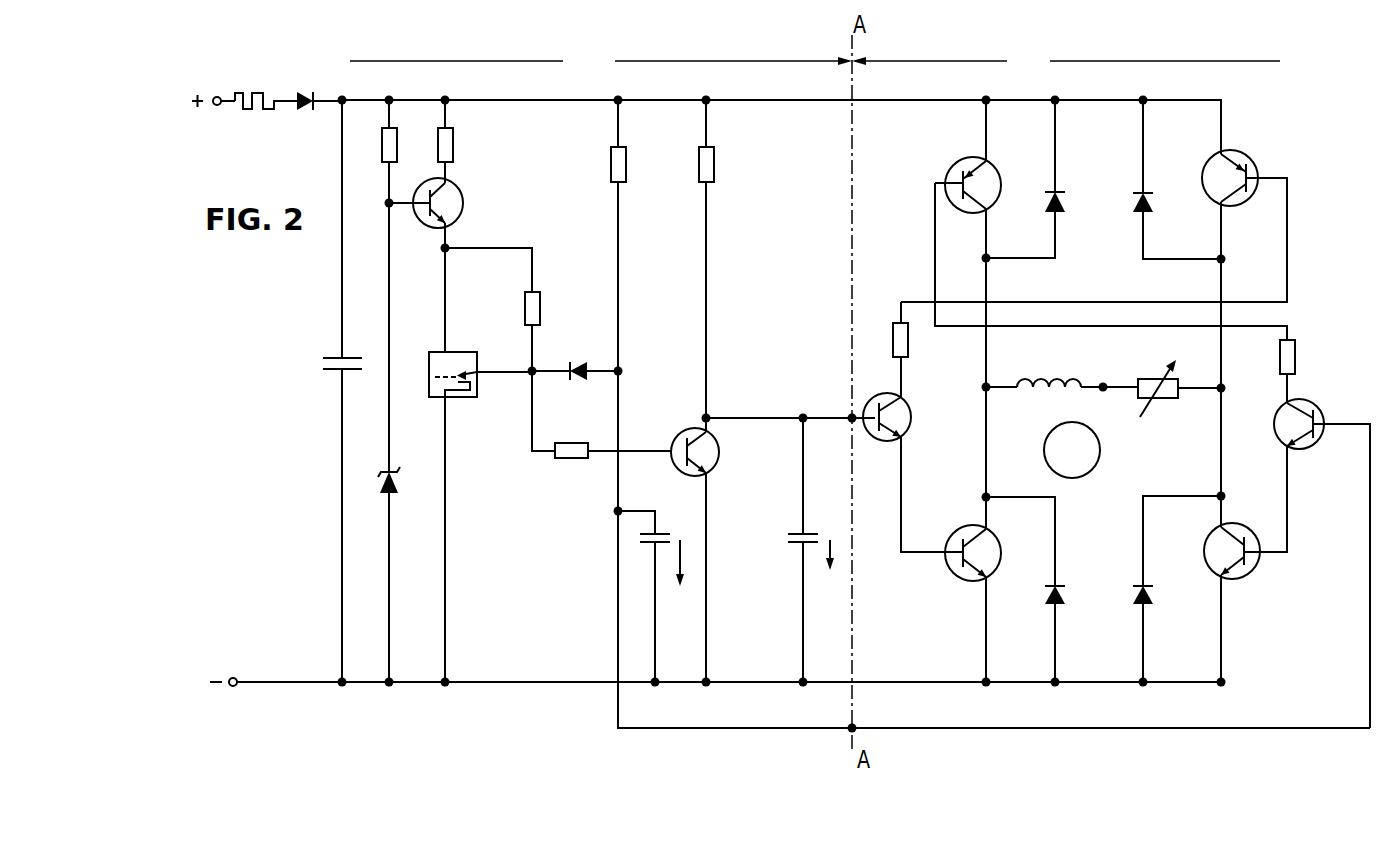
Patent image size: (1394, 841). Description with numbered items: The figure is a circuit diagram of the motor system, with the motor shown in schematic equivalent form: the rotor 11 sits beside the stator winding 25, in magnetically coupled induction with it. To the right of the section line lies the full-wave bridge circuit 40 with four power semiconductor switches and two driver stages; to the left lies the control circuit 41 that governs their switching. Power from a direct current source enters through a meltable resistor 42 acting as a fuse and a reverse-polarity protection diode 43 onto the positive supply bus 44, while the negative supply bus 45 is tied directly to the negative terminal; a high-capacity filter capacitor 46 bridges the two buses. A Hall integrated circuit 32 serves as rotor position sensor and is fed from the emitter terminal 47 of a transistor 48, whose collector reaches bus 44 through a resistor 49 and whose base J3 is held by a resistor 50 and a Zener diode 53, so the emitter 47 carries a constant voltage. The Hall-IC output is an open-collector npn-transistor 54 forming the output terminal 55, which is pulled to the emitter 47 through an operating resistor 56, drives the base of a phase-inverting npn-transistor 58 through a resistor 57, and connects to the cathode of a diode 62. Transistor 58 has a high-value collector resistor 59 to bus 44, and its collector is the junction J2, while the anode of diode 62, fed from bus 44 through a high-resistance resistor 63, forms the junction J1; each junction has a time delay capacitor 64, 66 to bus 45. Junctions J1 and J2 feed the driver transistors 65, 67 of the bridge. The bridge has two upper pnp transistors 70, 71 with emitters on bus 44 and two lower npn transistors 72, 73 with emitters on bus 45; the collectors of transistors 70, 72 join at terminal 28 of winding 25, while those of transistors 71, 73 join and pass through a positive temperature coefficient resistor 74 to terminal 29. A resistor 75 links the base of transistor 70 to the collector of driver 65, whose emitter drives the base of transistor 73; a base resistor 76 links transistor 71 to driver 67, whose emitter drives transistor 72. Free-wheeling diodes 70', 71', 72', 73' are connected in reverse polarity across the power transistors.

The rotor 11 is at (1100, 453).
The stator winding 25 is at (1053, 379).
The terminal of the stator winding 28 is at (988, 384).
The terminal of the stator winding 29 is at (1104, 384).
The Hall integrated circuit 32 is at (437, 357).
The full-wave bridge circuit 40 is at (1066, 63).
The control circuit 41 is at (601, 63).
The meltable resistor 42 is at (250, 93).
The diode 43 is at (306, 93).
The positive supply bus 44 is at (531, 100).
The negative supply bus 45 is at (290, 680).
The filter capacitor 46 is at (330, 363).
The emitter terminal 47 is at (450, 246).
The transistor 48 is at (462, 196).
The resistor 49 is at (453, 145).
The resistor 50 is at (383, 147).
The Zener diode 53 is at (398, 491).
The npn-transistor 54 is at (471, 384).
The output terminal of the Hall-IC 55 is at (517, 371).
The operating resistor 56 is at (541, 310).
The resistor 57 is at (575, 459).
The phase-inverting npn-transistor 58 is at (694, 428).
The collector resistor 59 is at (714, 166).
The diode 62 is at (580, 363).
The resistor 63 is at (626, 166).
The time delay capacitor 64 is at (660, 540).
The driver transistor 65 is at (1312, 405).
The time delay capacitor 66 is at (800, 540).
The driver transistor 67 is at (885, 395).
The pnp transistor 70 is at (1111, 220).
The free-wheeling diode 70' is at (1046, 179).
The pnp transistor 71 is at (1226, 204).
The free-wheeling diode 71' is at (1162, 179).
The npn transistor 72 is at (991, 603).
The free-wheeling diode 72' is at (1042, 589).
The npn transistor 73 is at (1214, 602).
The free-wheeling diode 73' is at (1155, 589).
The positive temperature coefficient resistor 74 is at (1165, 399).
The resistor 75 is at (1295, 356).
The base resistor 76 is at (893, 330).
The junction J1 is at (856, 725).
The junction J2 is at (850, 415).
The base of transistor 48 J3 is at (386, 205).